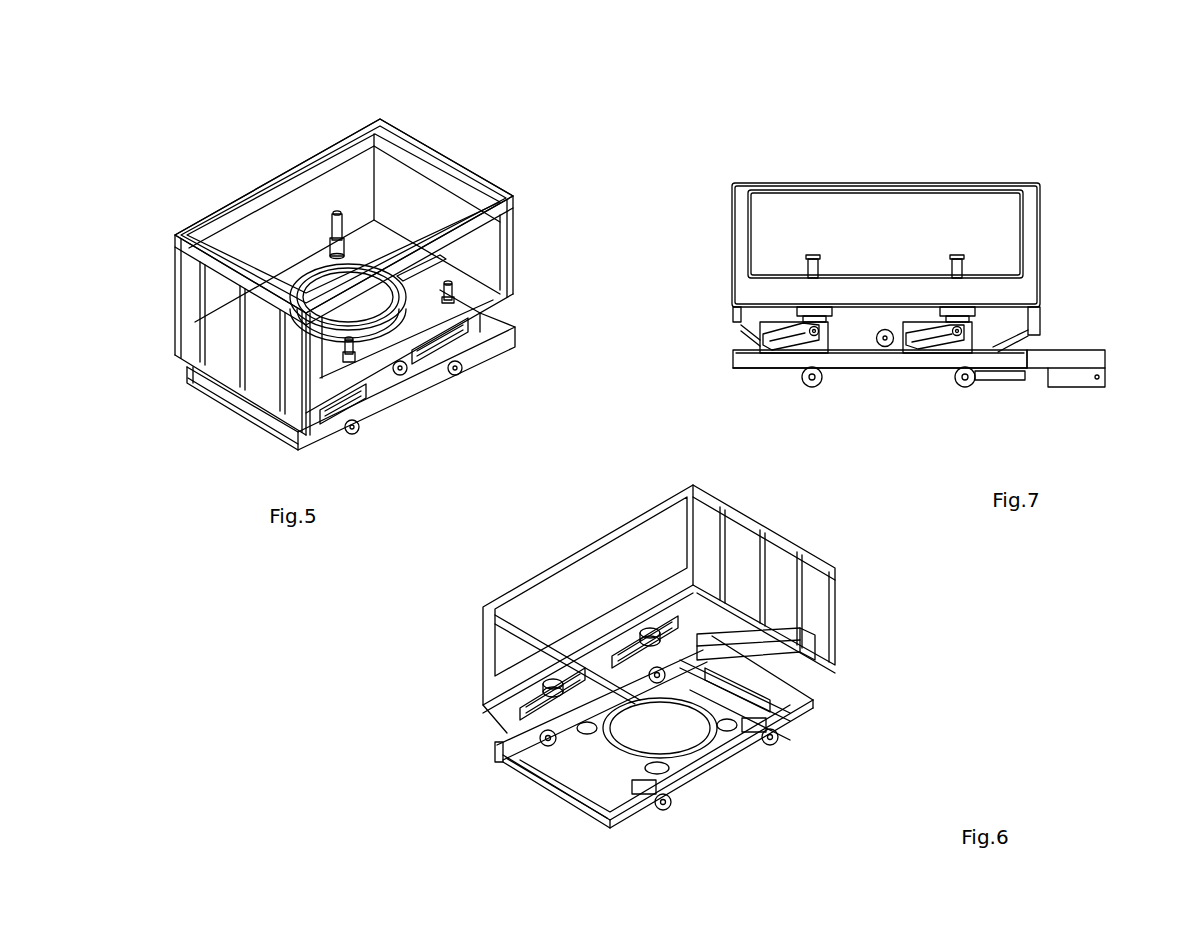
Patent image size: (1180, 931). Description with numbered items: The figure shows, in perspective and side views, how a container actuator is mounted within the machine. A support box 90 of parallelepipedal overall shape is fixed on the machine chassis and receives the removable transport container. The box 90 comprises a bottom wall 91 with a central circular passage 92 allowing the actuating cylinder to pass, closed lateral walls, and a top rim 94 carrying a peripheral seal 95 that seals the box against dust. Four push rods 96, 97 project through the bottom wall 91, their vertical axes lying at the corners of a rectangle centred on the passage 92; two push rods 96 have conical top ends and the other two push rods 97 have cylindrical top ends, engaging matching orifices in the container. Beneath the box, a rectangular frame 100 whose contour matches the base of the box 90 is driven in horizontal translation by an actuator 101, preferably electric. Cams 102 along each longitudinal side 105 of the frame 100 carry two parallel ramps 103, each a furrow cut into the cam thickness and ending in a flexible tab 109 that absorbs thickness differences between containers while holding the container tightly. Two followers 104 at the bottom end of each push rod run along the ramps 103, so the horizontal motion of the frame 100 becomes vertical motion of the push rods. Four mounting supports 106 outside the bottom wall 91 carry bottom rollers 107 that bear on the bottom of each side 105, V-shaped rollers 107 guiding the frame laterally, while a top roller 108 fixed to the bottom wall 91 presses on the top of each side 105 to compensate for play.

In FIG. 5, the support box 90 is at (490, 128).
In FIG. 6, the support box 90 is at (468, 587).
In FIG. 5, the bottom wall 91 is at (470, 283).
In FIG. 5, the central circular passage 92 is at (370, 300).
In FIG. 6, the central circular passage 92 is at (663, 742).
In FIG. 5, the top rim 94 is at (174, 236).
In FIG. 5, the peripheral seal 95 is at (207, 220).
In FIG. 5, the push rod 96 is at (338, 212).
In FIG. 7, the push rod 96 is at (813, 255).
In FIG. 5, the push rod 97 is at (451, 283).
In FIG. 7, the push rod 97 is at (960, 257).
In FIG. 5, the frame 100 is at (222, 412).
In FIG. 7, the frame 100 is at (727, 367).
In FIG. 6, the frame 100 is at (505, 785).
In FIG. 7, the actuator 101 is at (1082, 370).
In FIG. 6, the actuator 101 is at (783, 672).
In FIG. 7, the cam 102 is at (784, 352).
In FIG. 7, the ramp 103 is at (780, 339).
In FIG. 7, the follower 104 is at (961, 328).
In FIG. 5, the side 105 is at (492, 334).
In FIG. 7, the side 105 is at (873, 368).
In FIG. 6, the side 105 is at (490, 748).
In FIG. 6, the mounting support 106 is at (766, 744).
In FIG. 5, the bottom roller 107 is at (458, 368).
In FIG. 7, the bottom roller 107 is at (816, 385).
In FIG. 6, the bottom roller 107 is at (779, 739).
In FIG. 7, the top roller 108 is at (886, 330).
In FIG. 7, the flexible tab 109 is at (810, 330).